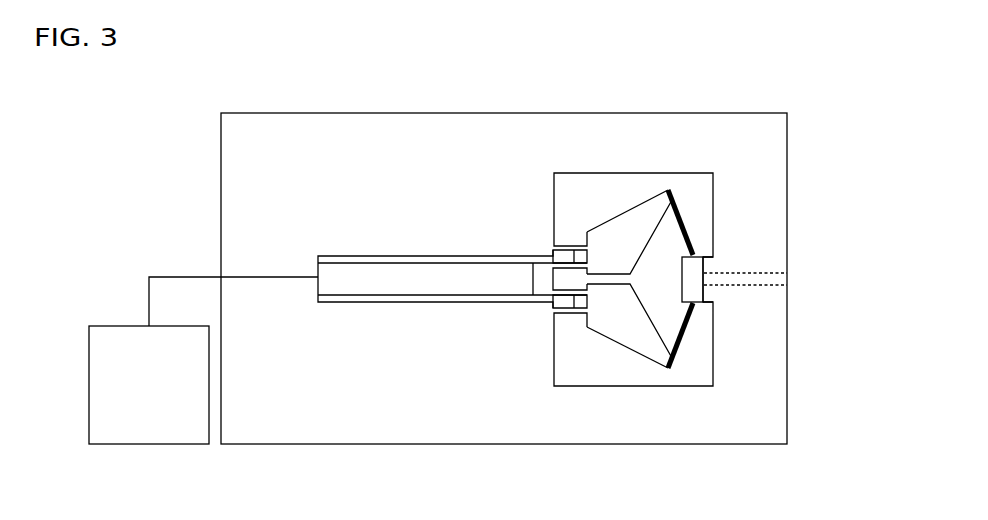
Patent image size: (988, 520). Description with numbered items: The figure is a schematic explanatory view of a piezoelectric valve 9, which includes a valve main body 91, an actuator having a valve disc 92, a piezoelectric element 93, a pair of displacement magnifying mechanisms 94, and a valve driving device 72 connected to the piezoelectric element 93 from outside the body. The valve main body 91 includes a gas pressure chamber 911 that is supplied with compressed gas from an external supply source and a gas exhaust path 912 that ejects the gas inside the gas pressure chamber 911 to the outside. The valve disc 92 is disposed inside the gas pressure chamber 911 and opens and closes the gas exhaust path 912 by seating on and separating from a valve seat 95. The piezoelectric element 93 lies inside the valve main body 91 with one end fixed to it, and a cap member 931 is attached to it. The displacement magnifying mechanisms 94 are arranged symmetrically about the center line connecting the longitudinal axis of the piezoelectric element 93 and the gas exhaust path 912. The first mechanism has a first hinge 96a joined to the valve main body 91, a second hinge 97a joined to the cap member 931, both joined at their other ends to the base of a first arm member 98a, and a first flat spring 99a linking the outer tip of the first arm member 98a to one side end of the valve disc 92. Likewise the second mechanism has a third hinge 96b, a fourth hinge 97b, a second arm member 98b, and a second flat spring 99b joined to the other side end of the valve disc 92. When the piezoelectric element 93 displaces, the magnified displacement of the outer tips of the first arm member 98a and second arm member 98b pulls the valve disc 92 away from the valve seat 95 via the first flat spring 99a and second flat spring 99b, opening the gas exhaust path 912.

The piezoelectric valve 9 is at (393, 97).
The valve driving device 72 is at (128, 335).
The valve main body 91 is at (253, 157).
The gas pressure chamber 911 is at (565, 180).
The gas exhaust path 912 is at (762, 275).
The valve disc 92 is at (695, 293).
The piezoelectric element 93 is at (452, 304).
The cap member 931 is at (533, 282).
The displacement magnifying mechanism 94 is at (660, 285).
The valve seat 95 is at (704, 256).
The first hinge 96a is at (568, 243).
The third hinge 96b is at (557, 312).
The second hinge 97a is at (575, 247).
The fourth hinge 97b is at (574, 300).
The first arm member 98a is at (637, 218).
The second arm member 98b is at (640, 347).
The first flat spring 99a is at (687, 222).
The second flat spring 99b is at (683, 335).